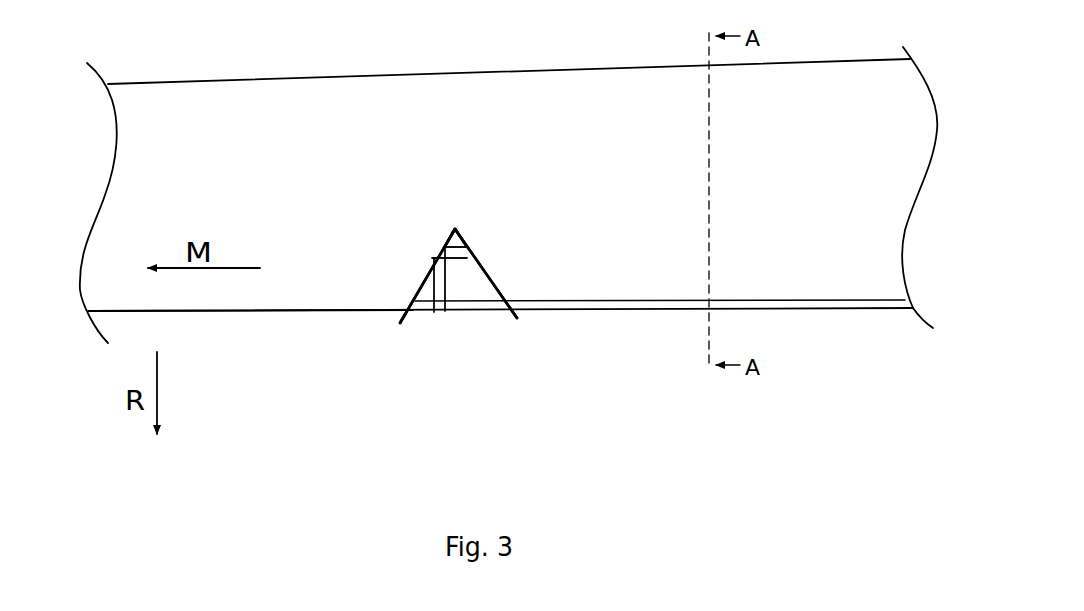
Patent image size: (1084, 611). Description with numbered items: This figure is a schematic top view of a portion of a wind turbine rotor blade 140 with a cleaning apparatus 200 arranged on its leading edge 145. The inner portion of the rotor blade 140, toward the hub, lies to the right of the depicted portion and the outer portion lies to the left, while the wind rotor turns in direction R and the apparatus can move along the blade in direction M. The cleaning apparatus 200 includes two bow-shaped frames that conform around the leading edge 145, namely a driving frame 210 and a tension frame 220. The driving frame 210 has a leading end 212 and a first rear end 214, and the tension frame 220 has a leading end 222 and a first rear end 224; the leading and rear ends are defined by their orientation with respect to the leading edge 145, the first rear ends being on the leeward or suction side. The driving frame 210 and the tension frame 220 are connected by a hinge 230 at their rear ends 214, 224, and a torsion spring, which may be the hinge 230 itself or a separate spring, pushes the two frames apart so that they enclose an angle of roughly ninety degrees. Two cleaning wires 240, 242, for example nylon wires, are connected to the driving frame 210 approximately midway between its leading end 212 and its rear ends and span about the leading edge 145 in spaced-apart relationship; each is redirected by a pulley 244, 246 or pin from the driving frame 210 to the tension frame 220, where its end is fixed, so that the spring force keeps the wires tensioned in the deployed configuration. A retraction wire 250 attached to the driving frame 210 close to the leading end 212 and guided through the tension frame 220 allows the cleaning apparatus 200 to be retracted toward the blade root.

The rotor blade 140 is at (818, 171).
The leading edge 145 is at (229, 313).
The cleaning apparatus 200 is at (316, 217).
The driving frame 210 is at (418, 291).
The leading end of driving frame 212 is at (401, 322).
The first rear end of driving frame 214 is at (448, 240).
The tension frame 220 is at (490, 283).
The leading end of tension frame 222 is at (513, 318).
The first rear end of tension frame 224 is at (462, 246).
The hinge 230 is at (455, 229).
The cleaning wire 240 is at (447, 313).
The cleaning wire 242 is at (427, 312).
The pulley 244 is at (445, 248).
The pulley 246 is at (438, 259).
The retraction wire 250 is at (668, 299).